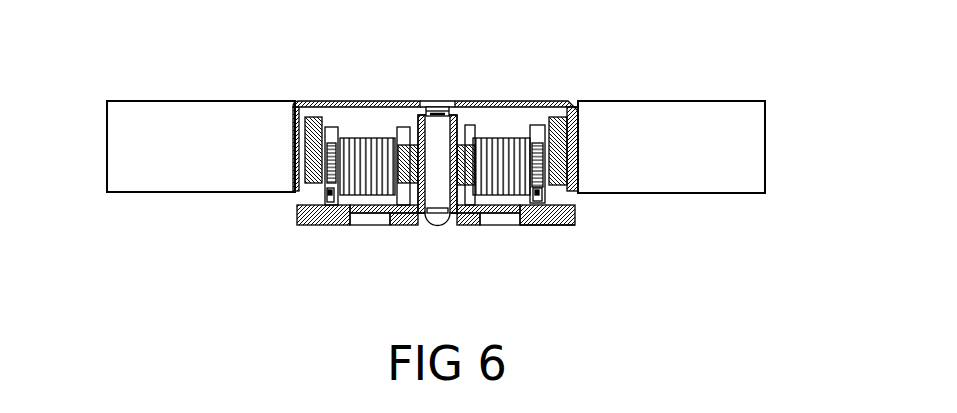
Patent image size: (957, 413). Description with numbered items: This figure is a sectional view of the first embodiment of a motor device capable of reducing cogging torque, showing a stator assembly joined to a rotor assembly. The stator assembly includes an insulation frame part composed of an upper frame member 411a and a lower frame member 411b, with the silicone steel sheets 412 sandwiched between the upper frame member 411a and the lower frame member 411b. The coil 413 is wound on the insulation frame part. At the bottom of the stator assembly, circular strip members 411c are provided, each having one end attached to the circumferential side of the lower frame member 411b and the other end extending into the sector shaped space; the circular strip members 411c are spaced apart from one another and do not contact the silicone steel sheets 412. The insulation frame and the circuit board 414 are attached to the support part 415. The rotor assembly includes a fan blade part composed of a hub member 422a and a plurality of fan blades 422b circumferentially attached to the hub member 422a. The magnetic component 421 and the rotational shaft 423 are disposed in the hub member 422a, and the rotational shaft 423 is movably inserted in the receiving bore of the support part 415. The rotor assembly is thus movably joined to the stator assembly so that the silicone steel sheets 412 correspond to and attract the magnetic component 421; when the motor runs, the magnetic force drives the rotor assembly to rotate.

The upper frame member 411a is at (296, 101).
The lower frame member 411b is at (575, 215).
The circular strip member 411c is at (300, 211).
The silicone steel sheet 412 is at (577, 181).
The coil 413 is at (370, 145).
The circuit board 414 is at (380, 213).
The support part 415 is at (567, 230).
The magnetic component 421 is at (578, 101).
The hub member 422a is at (483, 102).
The fan blade 422b is at (150, 110).
The rotational shaft 423 is at (437, 187).